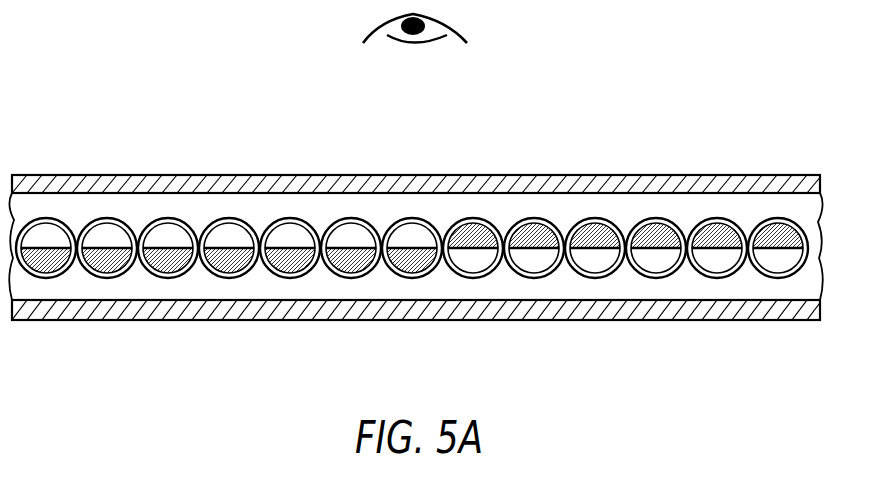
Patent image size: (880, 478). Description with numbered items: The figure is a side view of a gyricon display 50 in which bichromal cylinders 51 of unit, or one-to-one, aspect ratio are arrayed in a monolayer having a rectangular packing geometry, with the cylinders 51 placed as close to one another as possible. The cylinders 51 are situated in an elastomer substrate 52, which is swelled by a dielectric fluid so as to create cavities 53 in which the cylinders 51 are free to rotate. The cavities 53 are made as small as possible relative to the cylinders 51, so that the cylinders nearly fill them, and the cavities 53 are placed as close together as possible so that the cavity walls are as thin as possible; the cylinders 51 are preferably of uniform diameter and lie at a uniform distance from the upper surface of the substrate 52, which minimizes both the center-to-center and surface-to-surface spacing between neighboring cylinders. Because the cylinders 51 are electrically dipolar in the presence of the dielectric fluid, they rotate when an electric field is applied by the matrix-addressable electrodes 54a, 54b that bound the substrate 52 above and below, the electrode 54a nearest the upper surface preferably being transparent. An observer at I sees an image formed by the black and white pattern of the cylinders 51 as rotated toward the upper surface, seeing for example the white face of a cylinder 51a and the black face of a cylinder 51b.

The observer I is at (424, 28).
The display 50 is at (148, 70).
The bichromal cylinders 51 is at (228, 219).
The cylinder 51a is at (291, 271).
The cylinder 51b is at (717, 272).
The elastomer substrate 52 is at (569, 288).
The cavities 53 is at (98, 220).
The electrode 54a is at (777, 183).
The electrode 54b is at (789, 310).